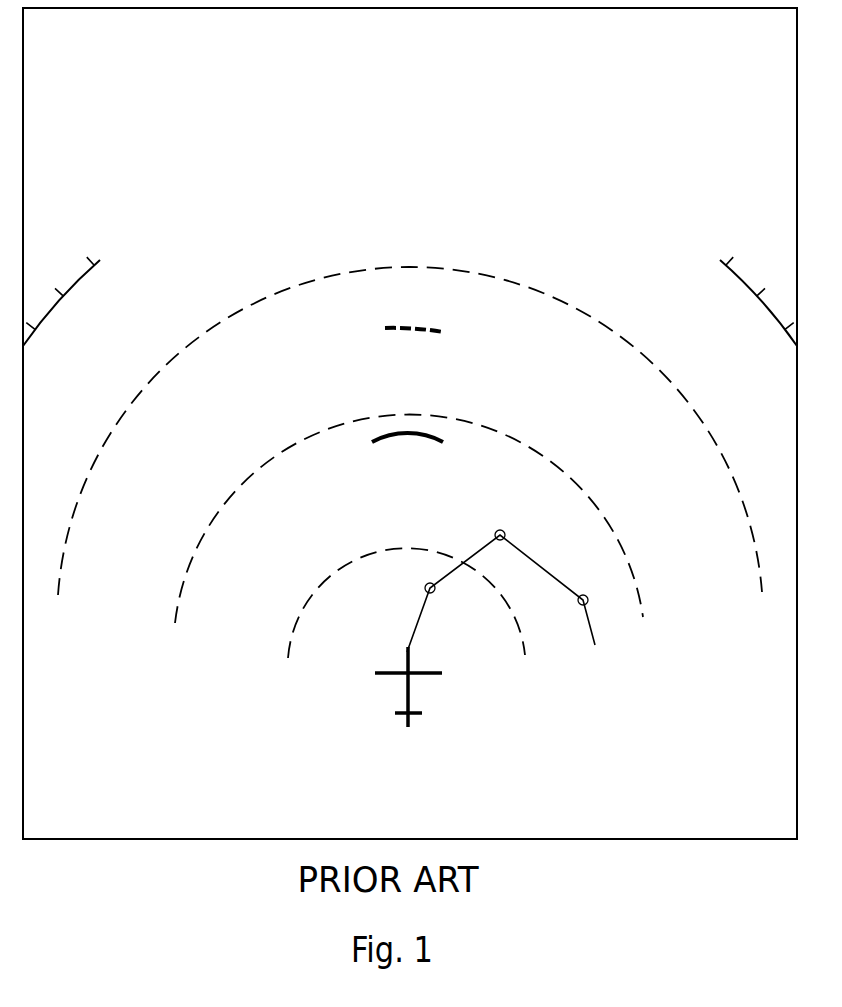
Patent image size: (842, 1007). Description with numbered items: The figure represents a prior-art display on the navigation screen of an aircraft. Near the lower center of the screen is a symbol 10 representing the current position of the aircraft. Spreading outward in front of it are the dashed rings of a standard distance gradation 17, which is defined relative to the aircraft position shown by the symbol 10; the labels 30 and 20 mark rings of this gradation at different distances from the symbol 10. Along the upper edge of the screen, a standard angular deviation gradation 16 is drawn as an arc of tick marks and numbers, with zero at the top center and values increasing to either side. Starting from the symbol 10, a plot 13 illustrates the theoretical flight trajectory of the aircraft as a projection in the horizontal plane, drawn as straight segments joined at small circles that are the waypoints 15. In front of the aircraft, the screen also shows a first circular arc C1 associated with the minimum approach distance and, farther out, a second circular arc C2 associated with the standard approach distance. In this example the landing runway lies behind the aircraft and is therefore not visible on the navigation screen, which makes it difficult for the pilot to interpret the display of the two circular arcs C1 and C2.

The symbol 10 is at (405, 690).
The plot 13 is at (540, 565).
The waypoints 15 is at (500, 532).
The standard angular deviation gradation 16 is at (410, 194).
The standard distance gradation 17 is at (97, 465).
The inner range ring 20 is at (409, 519).
The outer range ring 30 is at (410, 431).
The first circular arc C1 is at (372, 438).
The second circular arc C2 is at (383, 329).